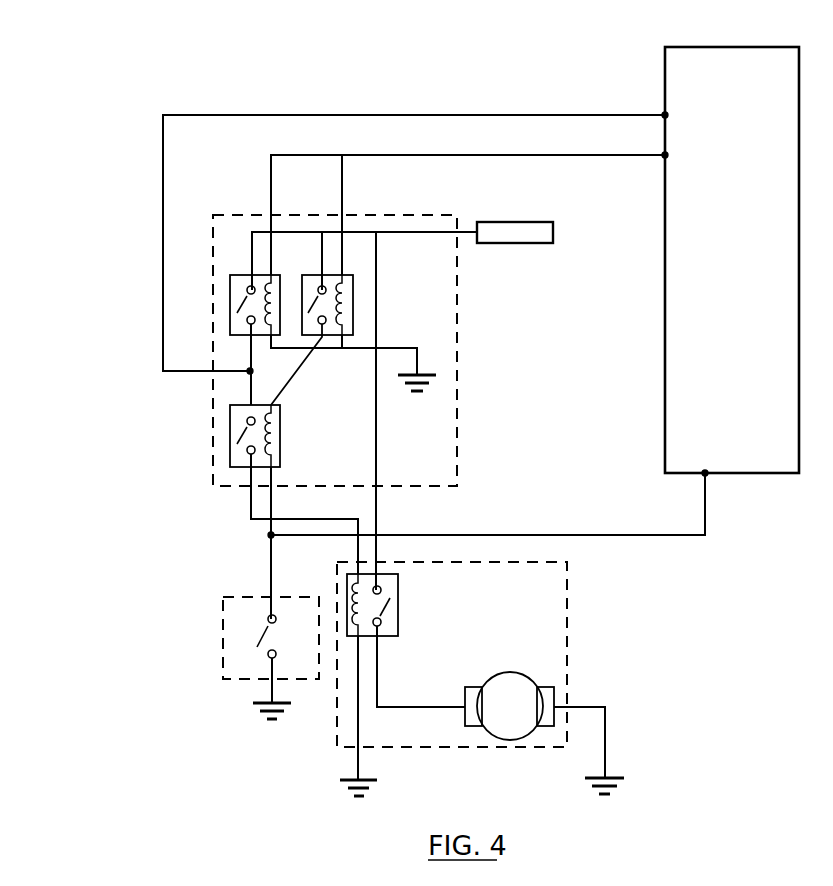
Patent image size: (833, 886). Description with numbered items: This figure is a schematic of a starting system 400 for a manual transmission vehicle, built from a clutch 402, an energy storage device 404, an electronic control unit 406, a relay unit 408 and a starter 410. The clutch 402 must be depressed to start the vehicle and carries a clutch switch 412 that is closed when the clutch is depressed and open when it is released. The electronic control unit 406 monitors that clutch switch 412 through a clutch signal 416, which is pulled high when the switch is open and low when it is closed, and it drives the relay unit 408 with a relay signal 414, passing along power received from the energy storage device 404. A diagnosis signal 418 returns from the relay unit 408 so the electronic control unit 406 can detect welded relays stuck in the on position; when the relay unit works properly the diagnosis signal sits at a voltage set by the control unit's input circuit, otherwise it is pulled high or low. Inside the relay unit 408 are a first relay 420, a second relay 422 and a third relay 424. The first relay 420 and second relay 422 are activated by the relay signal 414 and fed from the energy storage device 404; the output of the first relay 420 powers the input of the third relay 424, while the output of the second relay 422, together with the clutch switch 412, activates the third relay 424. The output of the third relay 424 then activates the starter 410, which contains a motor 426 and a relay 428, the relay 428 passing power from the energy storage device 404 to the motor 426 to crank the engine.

The starting system 400 is at (162, 43).
The clutch 402 is at (229, 598).
The energy storage device 404 is at (528, 221).
The electronic control unit 406 is at (735, 50).
The relay unit 408 is at (247, 216).
The starter 410 is at (567, 612).
The clutch switch 412 is at (243, 647).
The relay signal 414 is at (597, 158).
The clutch signal 416 is at (605, 534).
The diagnosis signal 418 is at (595, 114).
The first relay 420 is at (230, 293).
The second relay 422 is at (353, 296).
The third relay 424 is at (230, 440).
The motor 426 is at (510, 672).
The relay 428 is at (398, 603).